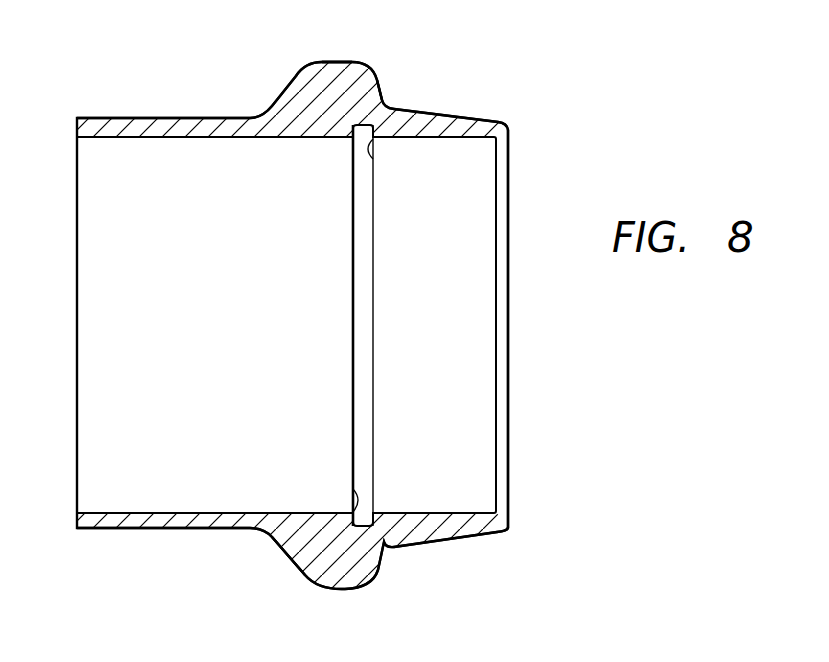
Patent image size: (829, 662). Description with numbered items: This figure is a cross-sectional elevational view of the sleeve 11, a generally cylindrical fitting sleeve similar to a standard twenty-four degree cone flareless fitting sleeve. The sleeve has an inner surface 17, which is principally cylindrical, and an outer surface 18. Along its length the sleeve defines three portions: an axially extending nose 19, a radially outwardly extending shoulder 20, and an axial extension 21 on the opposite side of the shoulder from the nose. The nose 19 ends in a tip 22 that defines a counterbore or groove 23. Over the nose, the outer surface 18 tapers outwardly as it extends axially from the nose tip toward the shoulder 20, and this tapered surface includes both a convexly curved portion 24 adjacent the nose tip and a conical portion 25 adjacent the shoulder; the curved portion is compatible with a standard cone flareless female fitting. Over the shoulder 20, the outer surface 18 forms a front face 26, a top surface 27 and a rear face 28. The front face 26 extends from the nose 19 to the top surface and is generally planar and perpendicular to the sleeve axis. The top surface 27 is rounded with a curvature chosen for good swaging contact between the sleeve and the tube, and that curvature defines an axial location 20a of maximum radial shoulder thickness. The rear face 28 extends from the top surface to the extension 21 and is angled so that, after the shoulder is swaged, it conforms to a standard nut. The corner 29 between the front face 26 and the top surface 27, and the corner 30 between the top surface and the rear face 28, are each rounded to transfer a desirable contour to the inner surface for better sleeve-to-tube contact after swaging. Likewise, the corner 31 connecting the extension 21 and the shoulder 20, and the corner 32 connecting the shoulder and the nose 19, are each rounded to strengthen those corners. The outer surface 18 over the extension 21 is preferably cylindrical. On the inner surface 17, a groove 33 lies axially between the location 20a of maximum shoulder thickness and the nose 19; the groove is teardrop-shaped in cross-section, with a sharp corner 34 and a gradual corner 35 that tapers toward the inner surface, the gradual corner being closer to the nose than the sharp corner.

The sleeve 11 is at (642, 405).
The inner surface 17 is at (100, 512).
The outer surface 18 is at (128, 530).
The nose 19 is at (434, 123).
The shoulder 20 is at (326, 96).
The axial location of maximum radial shoulder thickness 20a is at (345, 62).
The axial extension 21 is at (131, 125).
The nose tip 22 is at (508, 130).
The counterbore or groove 23 is at (503, 190).
The convexly curved portion 24 is at (481, 538).
The conical portion 25 is at (413, 545).
The front face 26 is at (384, 96).
The top surface 27 is at (335, 62).
The rear face 28 is at (287, 97).
The corner 29 is at (372, 584).
The corner 30 is at (310, 582).
The corner 31 is at (259, 533).
The corner 32 is at (384, 549).
The groove 33 is at (366, 212).
The sharp corner 34 is at (354, 493).
The gradual corner 35 is at (374, 153).